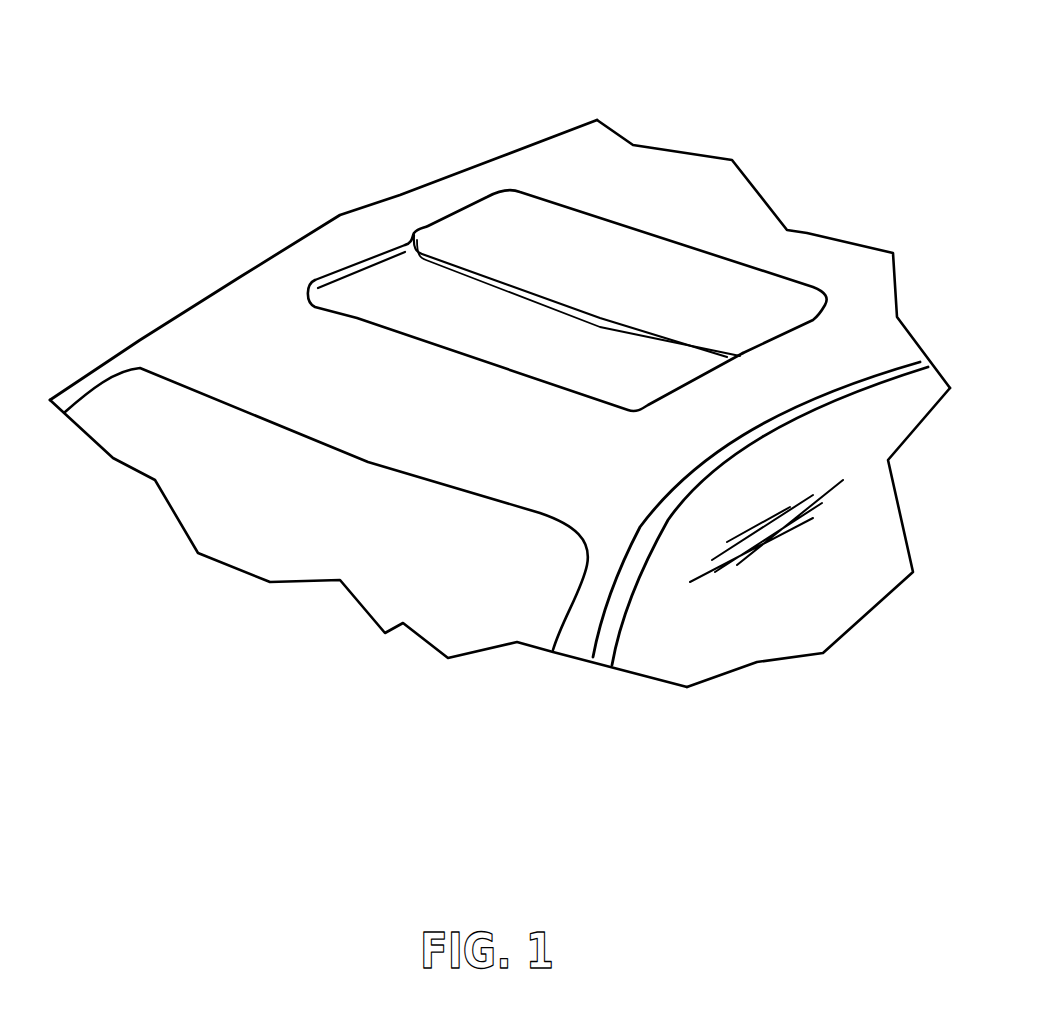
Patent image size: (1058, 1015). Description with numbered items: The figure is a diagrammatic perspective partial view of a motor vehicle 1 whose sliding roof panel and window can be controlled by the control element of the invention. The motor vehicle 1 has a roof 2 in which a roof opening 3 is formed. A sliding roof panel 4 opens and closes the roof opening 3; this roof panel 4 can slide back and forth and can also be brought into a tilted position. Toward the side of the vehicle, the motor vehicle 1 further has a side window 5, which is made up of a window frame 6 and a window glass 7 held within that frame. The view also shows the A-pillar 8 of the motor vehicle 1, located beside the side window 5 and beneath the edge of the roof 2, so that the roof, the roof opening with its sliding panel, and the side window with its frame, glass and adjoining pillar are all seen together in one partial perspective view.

The motor vehicle 1 is at (227, 232).
The roof 2 is at (562, 167).
The roof opening 3 is at (390, 292).
The sliding roof panel 4 is at (493, 253).
The side window 5 is at (840, 445).
The window frame 6 is at (603, 638).
The window glass 7 is at (778, 637).
The A-pillar 8 is at (573, 637).